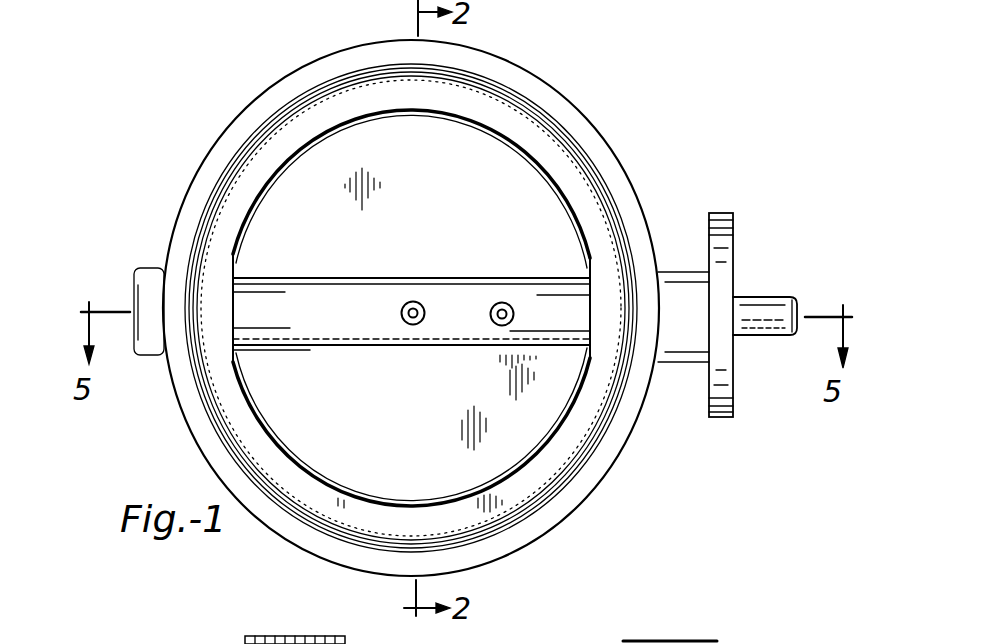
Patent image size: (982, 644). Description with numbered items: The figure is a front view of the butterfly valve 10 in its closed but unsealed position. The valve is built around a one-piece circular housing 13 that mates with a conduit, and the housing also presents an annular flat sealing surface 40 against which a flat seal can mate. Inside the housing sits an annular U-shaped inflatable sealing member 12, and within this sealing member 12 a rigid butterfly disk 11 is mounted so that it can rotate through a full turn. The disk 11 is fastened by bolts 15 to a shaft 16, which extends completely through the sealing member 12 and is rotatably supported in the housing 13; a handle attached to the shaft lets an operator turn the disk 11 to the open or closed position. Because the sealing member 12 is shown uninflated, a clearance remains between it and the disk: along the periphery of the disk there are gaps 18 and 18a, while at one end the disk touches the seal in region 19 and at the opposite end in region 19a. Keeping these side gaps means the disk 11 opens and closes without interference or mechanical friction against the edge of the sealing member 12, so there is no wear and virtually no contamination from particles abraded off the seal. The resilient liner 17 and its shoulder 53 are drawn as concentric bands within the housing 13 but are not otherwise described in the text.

The butterfly valve 10 is at (450, 294).
The butterfly disk 11 is at (333, 250).
The annular U-shaped inflatable sealing member 12 is at (568, 167).
The circular housing 13 is at (619, 183).
The bolts 15 is at (426, 302).
The shaft 16 is at (745, 295).
The resilient liner 17 is at (334, 78).
The gap 18 is at (413, 505).
The gap 18a is at (414, 112).
The contact region 19 is at (591, 294).
The contact region 19a is at (233, 280).
The annular flat sealing surface 40 is at (541, 84).
The liner shoulder 53 is at (276, 108).